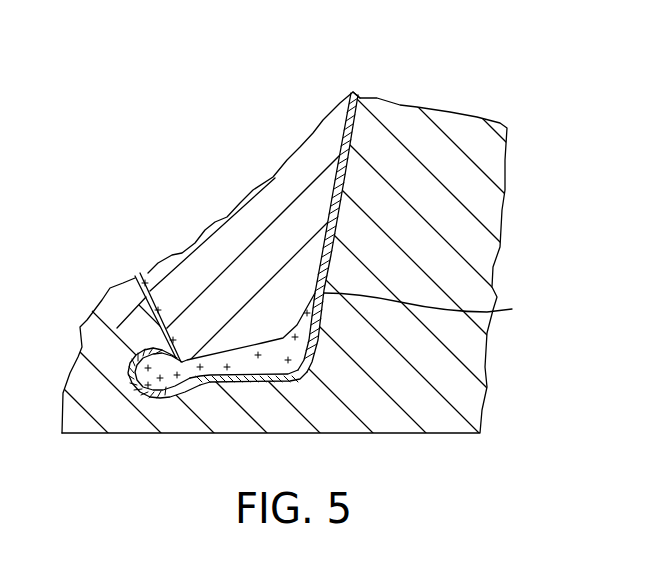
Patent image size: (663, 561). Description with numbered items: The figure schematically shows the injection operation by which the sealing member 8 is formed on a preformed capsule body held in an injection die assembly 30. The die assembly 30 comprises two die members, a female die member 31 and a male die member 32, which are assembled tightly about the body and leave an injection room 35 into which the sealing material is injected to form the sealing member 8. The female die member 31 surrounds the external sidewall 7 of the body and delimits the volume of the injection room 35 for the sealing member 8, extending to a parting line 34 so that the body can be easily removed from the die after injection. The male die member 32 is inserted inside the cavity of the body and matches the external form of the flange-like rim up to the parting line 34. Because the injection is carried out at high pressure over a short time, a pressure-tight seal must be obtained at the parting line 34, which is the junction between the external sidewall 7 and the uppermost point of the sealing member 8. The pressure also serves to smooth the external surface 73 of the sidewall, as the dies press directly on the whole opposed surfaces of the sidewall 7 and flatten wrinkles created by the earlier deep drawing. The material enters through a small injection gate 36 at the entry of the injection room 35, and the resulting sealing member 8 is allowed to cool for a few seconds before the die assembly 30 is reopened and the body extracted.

The external sidewall 7 is at (354, 86).
The sealing member 8 is at (301, 380).
The injection die assembly 30 is at (514, 397).
The female die member 31 is at (230, 230).
The male die member 32 is at (438, 418).
The parting line 34 is at (140, 355).
The injection room 35 is at (431, 307).
The injection gate 36 is at (134, 269).
The external surface 73 is at (346, 196).